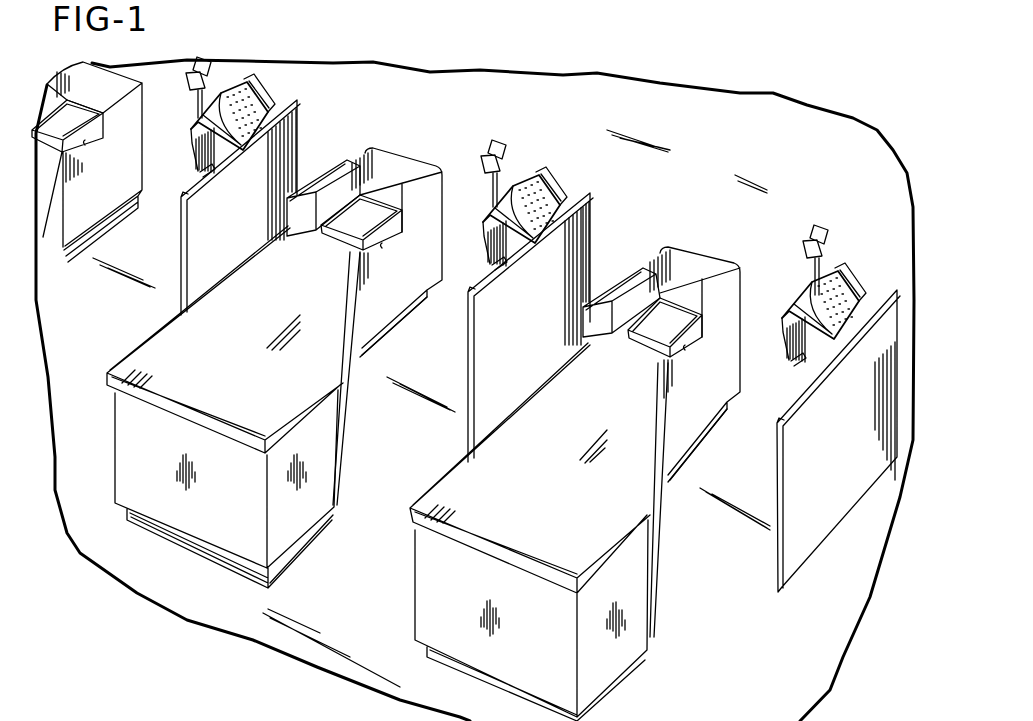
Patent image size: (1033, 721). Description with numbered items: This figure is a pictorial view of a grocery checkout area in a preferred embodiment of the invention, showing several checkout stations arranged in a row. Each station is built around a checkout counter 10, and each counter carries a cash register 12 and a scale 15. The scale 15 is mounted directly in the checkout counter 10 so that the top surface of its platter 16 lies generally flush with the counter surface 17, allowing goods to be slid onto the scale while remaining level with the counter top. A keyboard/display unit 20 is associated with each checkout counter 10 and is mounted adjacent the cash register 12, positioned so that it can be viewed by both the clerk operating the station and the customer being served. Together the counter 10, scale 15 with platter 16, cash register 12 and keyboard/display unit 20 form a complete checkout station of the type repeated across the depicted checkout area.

The checkout counter 10 is at (160, 352).
The cash register 12 is at (265, 96).
The scale 15 is at (330, 172).
The platter 16 is at (80, 118).
The counter surface 17 is at (318, 352).
The keyboard/display unit 20 is at (208, 77).